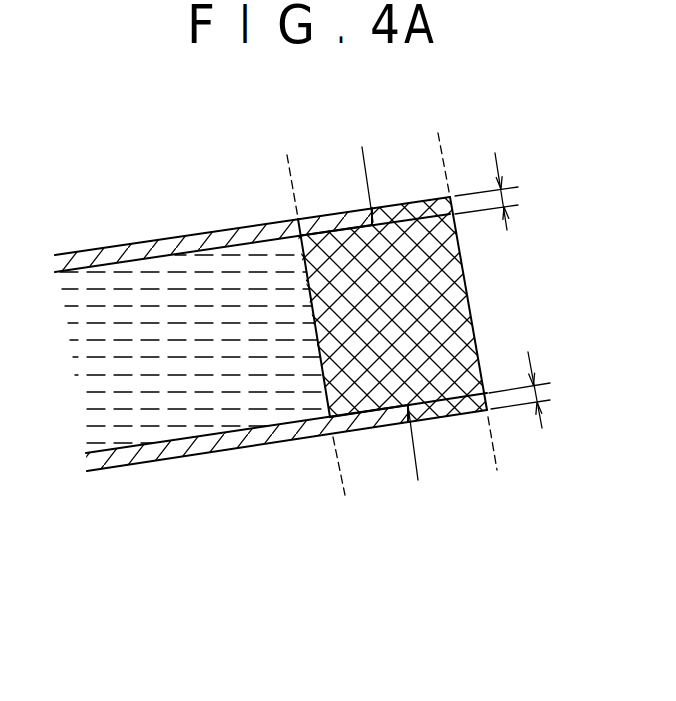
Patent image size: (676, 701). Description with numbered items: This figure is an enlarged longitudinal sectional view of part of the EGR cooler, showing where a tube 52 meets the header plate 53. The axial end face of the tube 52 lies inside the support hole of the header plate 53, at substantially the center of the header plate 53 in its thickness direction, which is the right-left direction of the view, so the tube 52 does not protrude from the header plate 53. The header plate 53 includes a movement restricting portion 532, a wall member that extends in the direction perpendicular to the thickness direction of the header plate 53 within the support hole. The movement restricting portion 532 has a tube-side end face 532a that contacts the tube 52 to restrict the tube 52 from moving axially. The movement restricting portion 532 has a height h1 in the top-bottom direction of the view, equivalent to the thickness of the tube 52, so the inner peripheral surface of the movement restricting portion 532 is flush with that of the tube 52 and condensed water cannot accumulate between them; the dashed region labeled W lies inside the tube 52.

The tube 52 is at (178, 242).
The header plate 53 is at (400, 297).
The movement restricting portion 532 is at (406, 200).
The tube-side end face 532a is at (368, 212).
The wire W is at (147, 383).
The height h1 is at (519, 290).